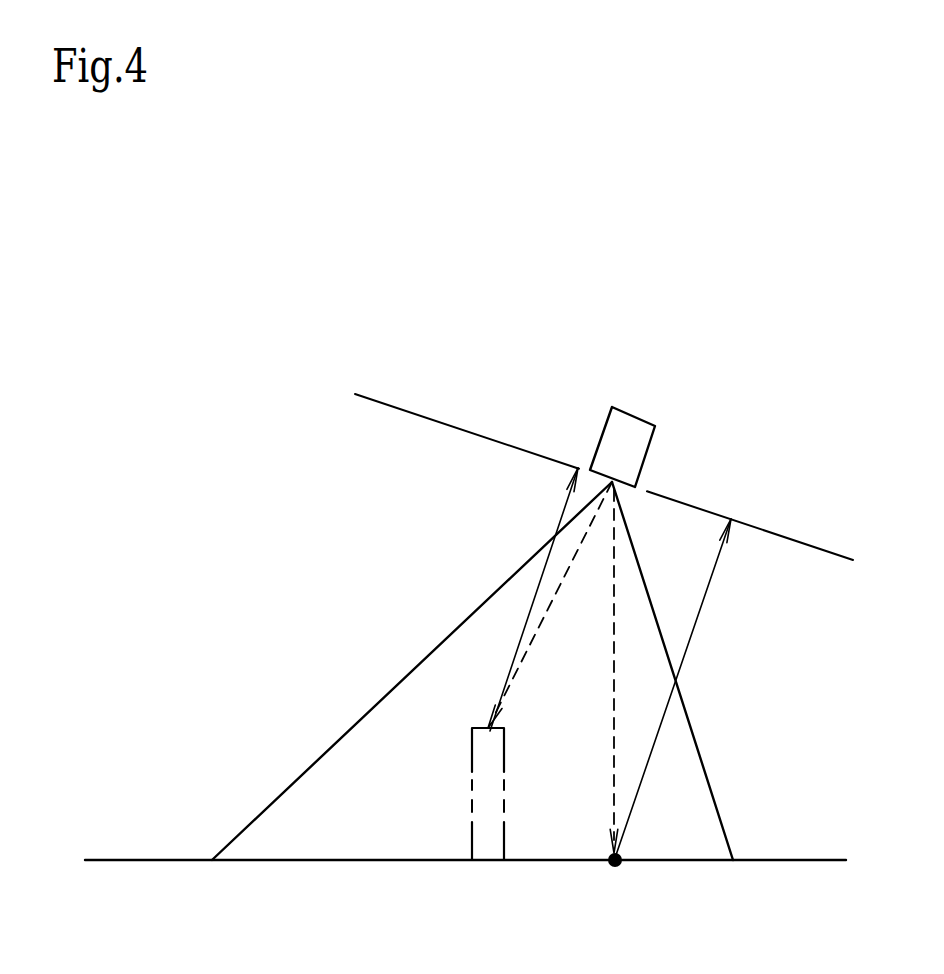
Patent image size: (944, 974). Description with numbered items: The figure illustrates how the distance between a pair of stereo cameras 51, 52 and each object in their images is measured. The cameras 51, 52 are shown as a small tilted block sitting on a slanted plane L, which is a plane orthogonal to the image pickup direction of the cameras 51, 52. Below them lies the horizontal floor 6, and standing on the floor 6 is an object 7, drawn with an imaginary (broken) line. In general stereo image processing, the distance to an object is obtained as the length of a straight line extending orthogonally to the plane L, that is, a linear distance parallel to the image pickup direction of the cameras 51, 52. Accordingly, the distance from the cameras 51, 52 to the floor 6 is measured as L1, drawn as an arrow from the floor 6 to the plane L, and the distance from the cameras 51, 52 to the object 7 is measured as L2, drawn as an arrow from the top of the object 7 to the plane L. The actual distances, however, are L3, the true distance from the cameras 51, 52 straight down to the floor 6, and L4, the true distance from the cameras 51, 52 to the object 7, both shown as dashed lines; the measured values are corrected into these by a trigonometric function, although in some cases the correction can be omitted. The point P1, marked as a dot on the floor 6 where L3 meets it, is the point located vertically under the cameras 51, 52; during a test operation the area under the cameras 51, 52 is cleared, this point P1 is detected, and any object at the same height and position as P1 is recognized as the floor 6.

The camera 51 is at (696, 415).
The camera 52 is at (655, 426).
The plane L is at (807, 545).
The floor 6 is at (795, 858).
The object 7 is at (472, 765).
The point P1 is at (618, 867).
The measured distance to floor L1 is at (690, 643).
The measured distance to object L2 is at (530, 590).
The actual distance to floor L3 is at (613, 720).
The actual distance to object L4 is at (550, 603).